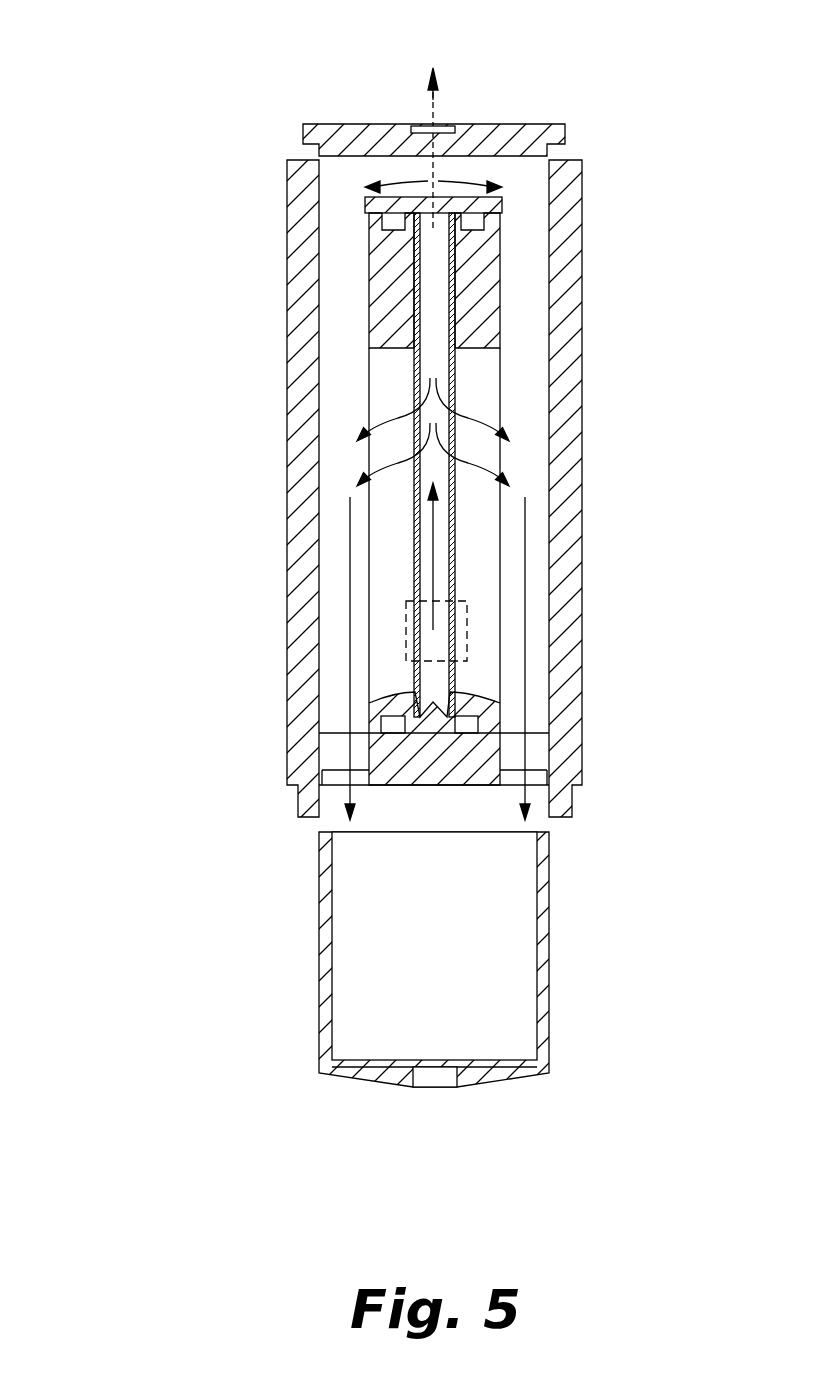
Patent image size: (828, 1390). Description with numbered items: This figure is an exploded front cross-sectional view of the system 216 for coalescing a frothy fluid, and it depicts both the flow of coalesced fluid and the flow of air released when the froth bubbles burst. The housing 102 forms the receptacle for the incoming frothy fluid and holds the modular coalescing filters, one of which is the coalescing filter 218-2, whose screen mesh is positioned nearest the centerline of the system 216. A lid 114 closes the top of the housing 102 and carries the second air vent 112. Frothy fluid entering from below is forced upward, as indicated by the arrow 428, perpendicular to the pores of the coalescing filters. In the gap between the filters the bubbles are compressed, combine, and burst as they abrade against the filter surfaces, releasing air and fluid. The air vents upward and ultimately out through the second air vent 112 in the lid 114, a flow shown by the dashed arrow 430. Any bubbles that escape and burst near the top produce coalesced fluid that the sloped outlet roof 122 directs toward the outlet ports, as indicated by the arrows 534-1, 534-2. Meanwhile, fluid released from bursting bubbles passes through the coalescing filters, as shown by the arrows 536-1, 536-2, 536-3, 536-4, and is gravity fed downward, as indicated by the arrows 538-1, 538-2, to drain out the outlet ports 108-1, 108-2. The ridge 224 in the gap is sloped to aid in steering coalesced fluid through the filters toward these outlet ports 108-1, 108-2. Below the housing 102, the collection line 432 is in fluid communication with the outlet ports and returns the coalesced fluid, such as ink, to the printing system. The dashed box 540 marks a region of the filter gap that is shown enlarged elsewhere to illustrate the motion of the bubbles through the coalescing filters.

The system 216 is at (206, 94).
The housing 102 is at (288, 533).
The lid 114 is at (301, 134).
The second air vent 112 is at (423, 122).
The dashed arrow 430 is at (435, 98).
The arrow 534-1 is at (402, 180).
The arrow 534-2 is at (468, 180).
The outlet roof 122 is at (502, 207).
The coalescing filter 218-2 is at (370, 240).
The arrow 428 is at (432, 578).
The arrow 536-1 is at (417, 412).
The arrow 536-2 is at (412, 453).
The arrow 536-3 is at (450, 411).
The arrow 536-4 is at (454, 454).
The arrow 538-1 is at (350, 517).
The arrow 538-2 is at (525, 562).
The dashed box 540 is at (467, 630).
The ridge 224 is at (500, 707).
The outlet port 108-1 is at (332, 745).
The outlet port 108-2 is at (533, 752).
The collection line 432 is at (548, 977).